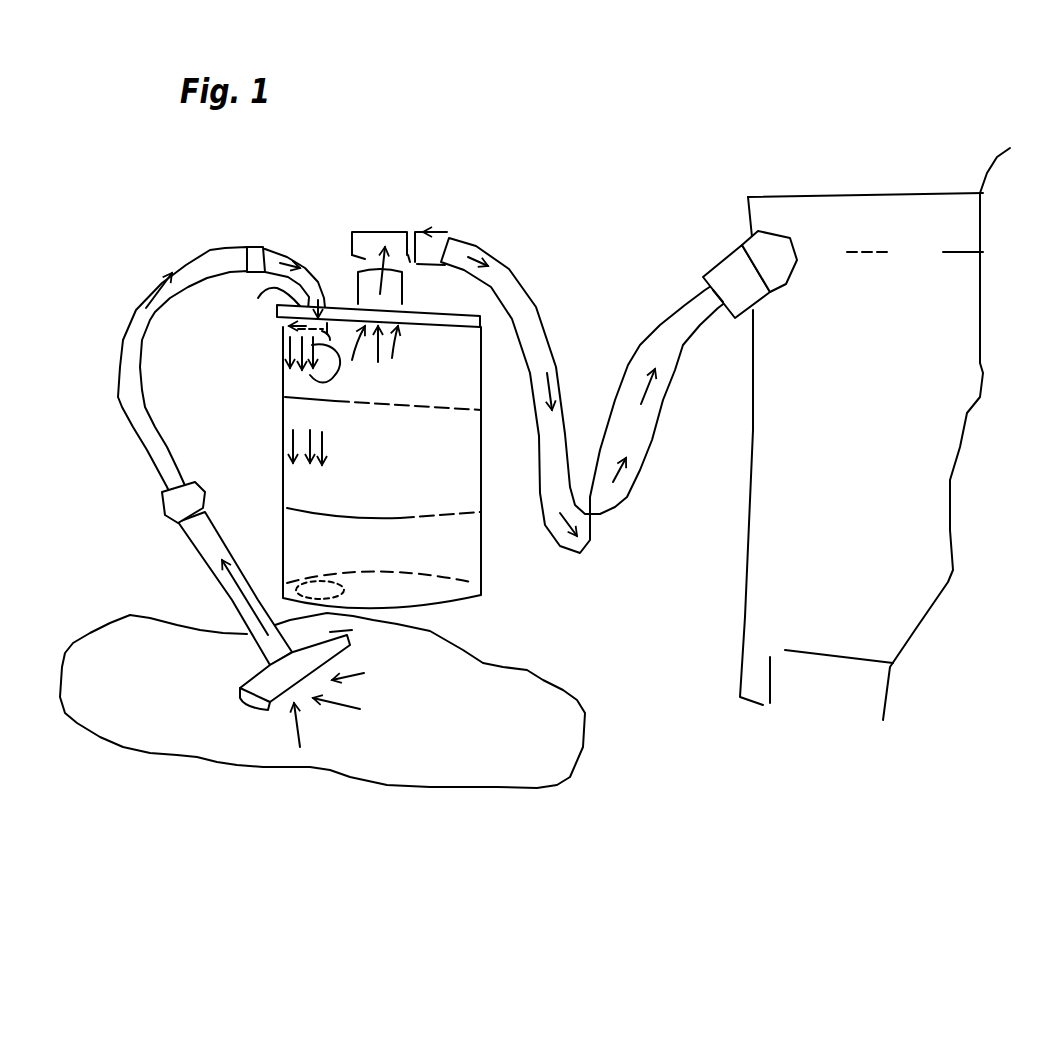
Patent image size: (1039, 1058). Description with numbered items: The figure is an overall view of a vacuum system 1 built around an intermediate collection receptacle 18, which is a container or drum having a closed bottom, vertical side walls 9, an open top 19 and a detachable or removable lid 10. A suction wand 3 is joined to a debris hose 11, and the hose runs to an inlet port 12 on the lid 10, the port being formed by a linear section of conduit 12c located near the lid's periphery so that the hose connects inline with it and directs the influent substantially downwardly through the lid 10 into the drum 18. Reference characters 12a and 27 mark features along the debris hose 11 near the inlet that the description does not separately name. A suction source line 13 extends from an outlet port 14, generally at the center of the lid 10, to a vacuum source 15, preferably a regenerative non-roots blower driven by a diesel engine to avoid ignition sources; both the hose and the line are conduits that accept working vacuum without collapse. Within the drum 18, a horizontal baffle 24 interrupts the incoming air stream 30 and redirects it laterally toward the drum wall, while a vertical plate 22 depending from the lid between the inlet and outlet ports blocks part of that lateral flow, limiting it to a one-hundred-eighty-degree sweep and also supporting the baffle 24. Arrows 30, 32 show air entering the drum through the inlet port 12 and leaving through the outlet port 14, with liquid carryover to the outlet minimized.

The vacuum system 1 is at (686, 108).
The suction wand 3 is at (231, 597).
The vertical side walls 9 is at (481, 382).
The lid 10 is at (258, 298).
The debris hose 11 is at (143, 363).
The inlet port 12 is at (324, 268).
The hose coupling 12a is at (282, 250).
The linear section of conduit 12c is at (358, 274).
The suction source line 13 is at (638, 346).
The outlet port 14 is at (412, 284).
The vacuum source 15 is at (845, 190).
The intermediate collection receptacle 18 is at (268, 428).
The open top 19 is at (273, 325).
The vertical plate 22 is at (333, 322).
The horizontal baffle 24 is at (334, 342).
The hose end 27 is at (264, 281).
The air stream 30 is at (331, 374).
The air flow arrows 32 is at (375, 357).